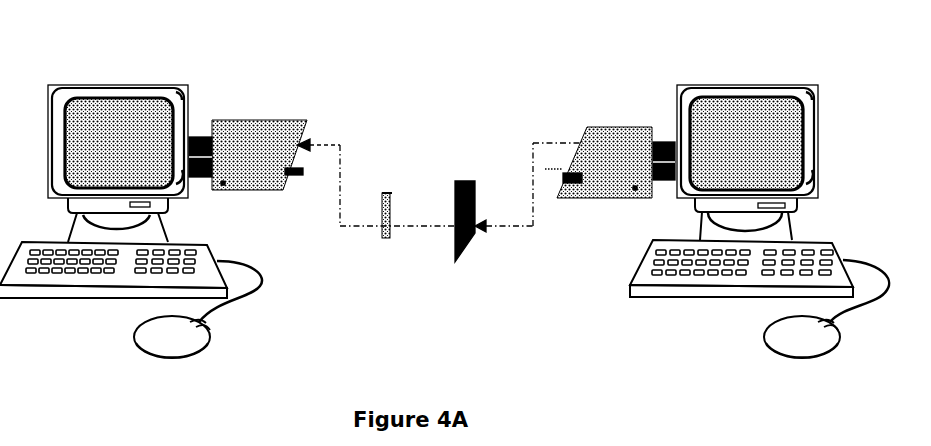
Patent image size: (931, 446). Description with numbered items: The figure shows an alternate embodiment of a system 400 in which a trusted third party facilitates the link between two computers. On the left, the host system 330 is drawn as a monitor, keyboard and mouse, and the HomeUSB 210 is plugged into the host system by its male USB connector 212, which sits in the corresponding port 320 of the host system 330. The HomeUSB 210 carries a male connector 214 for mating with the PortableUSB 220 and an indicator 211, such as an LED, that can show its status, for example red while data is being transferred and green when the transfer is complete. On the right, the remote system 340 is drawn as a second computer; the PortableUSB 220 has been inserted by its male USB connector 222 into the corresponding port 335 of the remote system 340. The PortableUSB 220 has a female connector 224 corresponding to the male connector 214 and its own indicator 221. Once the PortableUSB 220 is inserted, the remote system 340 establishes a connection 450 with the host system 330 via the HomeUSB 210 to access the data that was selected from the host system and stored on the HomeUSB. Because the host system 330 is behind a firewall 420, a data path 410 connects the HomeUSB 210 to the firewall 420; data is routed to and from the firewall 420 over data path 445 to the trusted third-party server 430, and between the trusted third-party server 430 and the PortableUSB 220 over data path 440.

The HomeUSB 210 is at (277, 118).
The indicator 211 is at (223, 183).
The male USB connector 212 is at (200, 132).
The male connector 214 is at (303, 175).
The PortableUSB 220 is at (619, 127).
The indicator 221 is at (635, 188).
The male USB connector 222 is at (665, 142).
The female connector 224 is at (560, 187).
The port 320 is at (190, 178).
The host system 330 is at (188, 176).
The port 335 is at (677, 185).
The remote system 340 is at (819, 170).
The system 400 is at (237, 378).
The data path 410 is at (343, 155).
The firewall 420 is at (392, 198).
The trusted third-party server 430 is at (475, 190).
The data path 440 is at (516, 228).
The data path 445 is at (412, 227).
The connection 450 is at (427, 248).